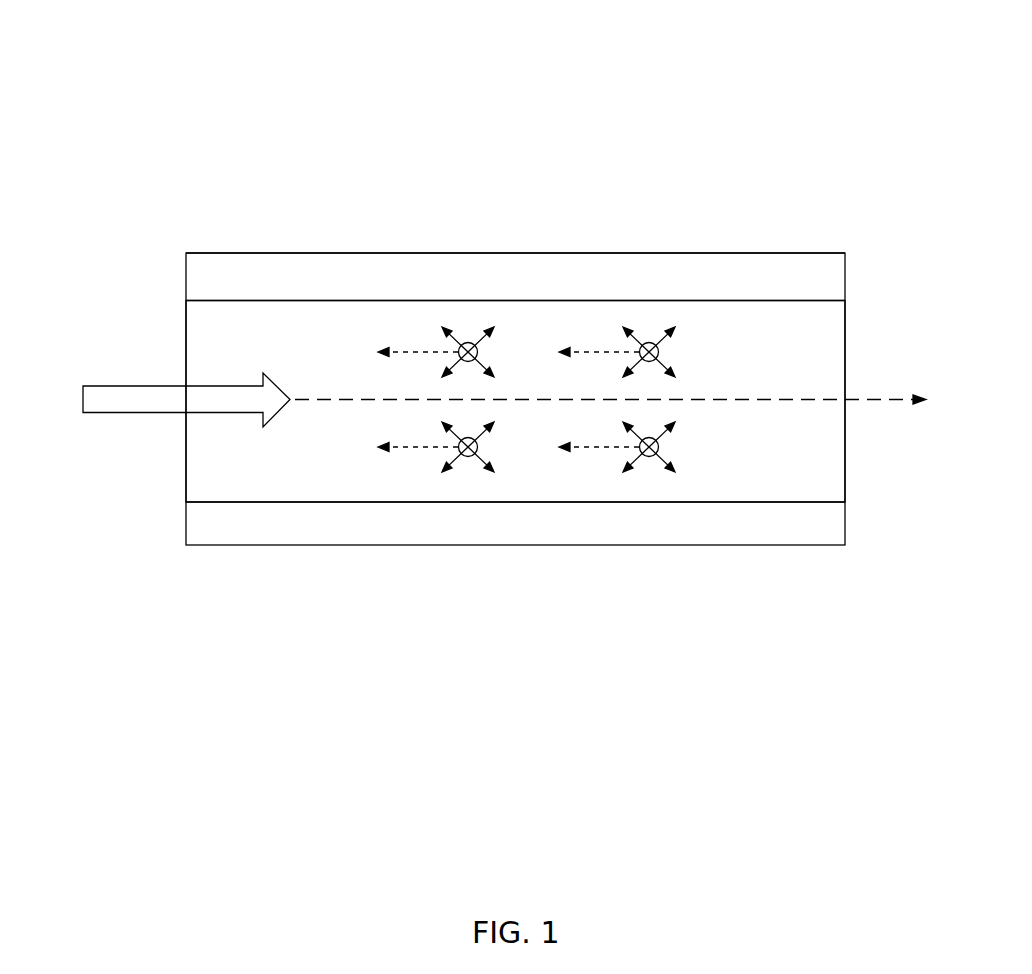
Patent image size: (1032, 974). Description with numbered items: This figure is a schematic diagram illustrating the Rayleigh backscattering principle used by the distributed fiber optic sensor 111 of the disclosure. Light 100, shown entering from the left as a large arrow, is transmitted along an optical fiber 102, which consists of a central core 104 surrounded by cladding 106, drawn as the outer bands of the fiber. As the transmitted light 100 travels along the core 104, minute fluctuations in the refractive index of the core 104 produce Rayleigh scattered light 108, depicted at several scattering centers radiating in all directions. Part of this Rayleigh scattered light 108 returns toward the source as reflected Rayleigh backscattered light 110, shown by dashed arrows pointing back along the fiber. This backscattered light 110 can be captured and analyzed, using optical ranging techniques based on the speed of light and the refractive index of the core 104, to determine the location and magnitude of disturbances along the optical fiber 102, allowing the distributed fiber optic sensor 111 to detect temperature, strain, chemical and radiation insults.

The light 100 is at (136, 364).
The optical fiber 102 is at (338, 233).
The core 104 is at (236, 322).
The cladding 106 is at (286, 270).
The Rayleigh scattered light 108 is at (463, 317).
The Rayleigh backscattered light 110 is at (420, 330).
The distributed fiber optic sensor 111 is at (511, 233).